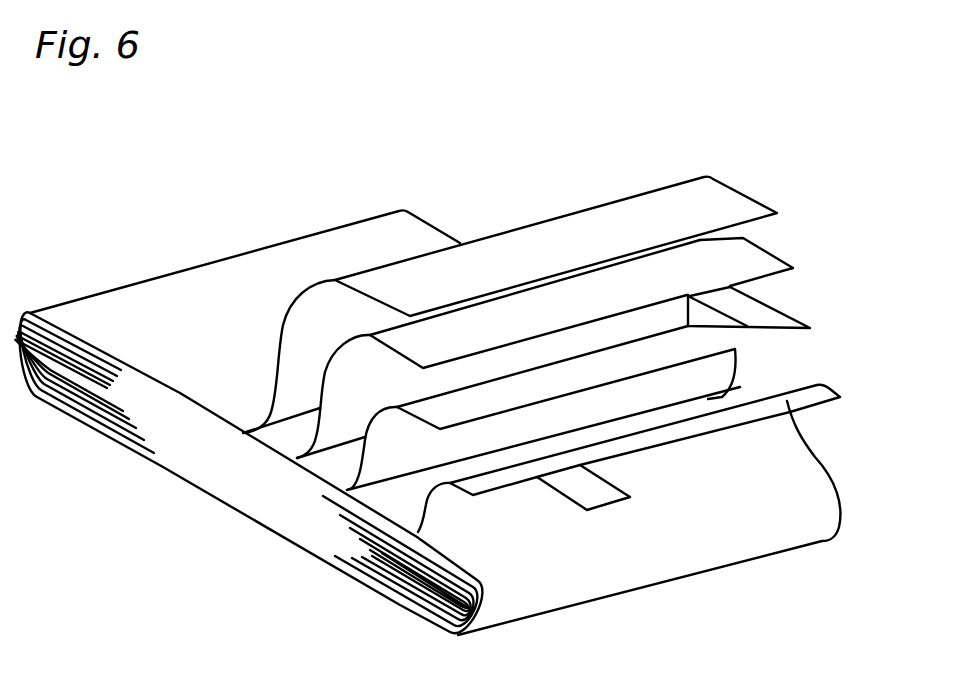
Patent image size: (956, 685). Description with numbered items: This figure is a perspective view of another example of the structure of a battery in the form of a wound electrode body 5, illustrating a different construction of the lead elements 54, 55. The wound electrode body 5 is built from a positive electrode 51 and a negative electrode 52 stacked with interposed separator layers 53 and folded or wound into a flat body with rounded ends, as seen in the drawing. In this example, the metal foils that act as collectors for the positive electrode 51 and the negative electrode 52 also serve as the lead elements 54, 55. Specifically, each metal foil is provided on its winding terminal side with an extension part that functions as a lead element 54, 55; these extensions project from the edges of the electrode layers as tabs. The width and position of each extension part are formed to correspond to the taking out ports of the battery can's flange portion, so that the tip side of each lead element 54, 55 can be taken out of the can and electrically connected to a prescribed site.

The wound electrode body 5 is at (222, 259).
The positive electrode 51 is at (786, 396).
The negative electrode 52 is at (762, 258).
The separator 53 is at (577, 381).
The lead element 54 is at (592, 492).
The lead element 55 is at (741, 303).